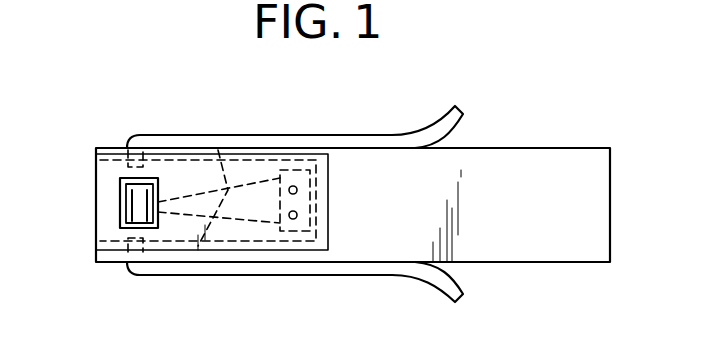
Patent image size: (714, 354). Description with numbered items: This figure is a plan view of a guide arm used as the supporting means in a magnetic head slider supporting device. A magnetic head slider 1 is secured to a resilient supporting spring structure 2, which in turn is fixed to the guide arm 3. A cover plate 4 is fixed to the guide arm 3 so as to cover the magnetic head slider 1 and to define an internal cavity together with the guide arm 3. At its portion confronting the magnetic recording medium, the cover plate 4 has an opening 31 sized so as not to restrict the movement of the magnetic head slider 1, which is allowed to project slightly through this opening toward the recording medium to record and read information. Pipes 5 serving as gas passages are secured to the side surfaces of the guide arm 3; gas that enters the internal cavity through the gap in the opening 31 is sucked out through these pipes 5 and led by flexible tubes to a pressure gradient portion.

The magnetic head slider 1 is at (138, 210).
The resilient supporting spring structure 2 is at (218, 150).
The guide arm 3 is at (568, 177).
The cover plate 4 is at (100, 176).
The pipe 5 is at (398, 134).
The opening 31 is at (120, 197).